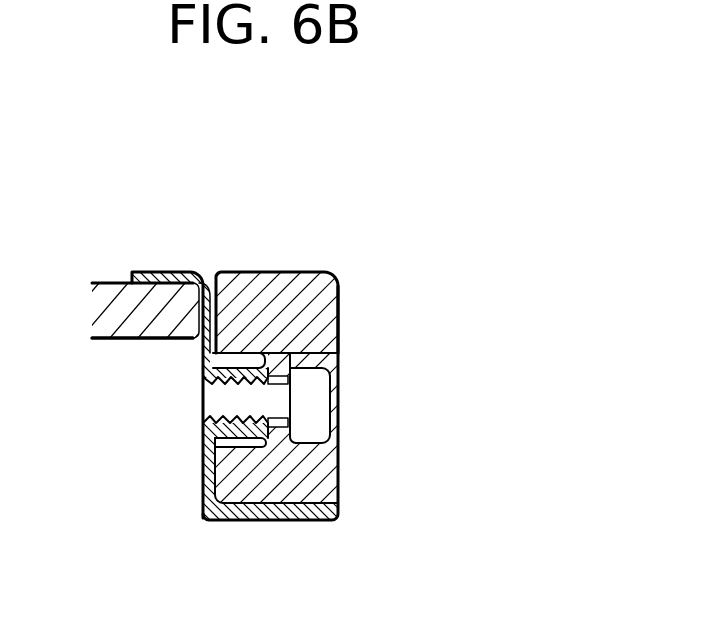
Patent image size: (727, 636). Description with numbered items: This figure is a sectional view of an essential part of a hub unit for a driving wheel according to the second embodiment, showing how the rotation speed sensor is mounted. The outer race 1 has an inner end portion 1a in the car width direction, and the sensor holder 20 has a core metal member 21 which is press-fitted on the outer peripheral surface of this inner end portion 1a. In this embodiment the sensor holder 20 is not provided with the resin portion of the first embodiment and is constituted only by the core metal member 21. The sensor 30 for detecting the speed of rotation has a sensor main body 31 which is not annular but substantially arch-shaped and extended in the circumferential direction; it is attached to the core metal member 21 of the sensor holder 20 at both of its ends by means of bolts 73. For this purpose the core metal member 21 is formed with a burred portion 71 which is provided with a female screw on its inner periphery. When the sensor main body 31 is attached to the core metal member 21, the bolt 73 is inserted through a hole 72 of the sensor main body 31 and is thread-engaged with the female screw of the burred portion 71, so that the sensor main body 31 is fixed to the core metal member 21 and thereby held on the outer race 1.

The outer race 1 is at (100, 280).
The inner end portion 1a is at (120, 340).
The sensor holder 20 is at (155, 272).
The core metal member 21 is at (204, 483).
The sensor 30 is at (341, 480).
The sensor main body 31 is at (338, 282).
The burred portion 71 is at (240, 432).
The hole 72 is at (288, 391).
The bolt 73 is at (310, 416).